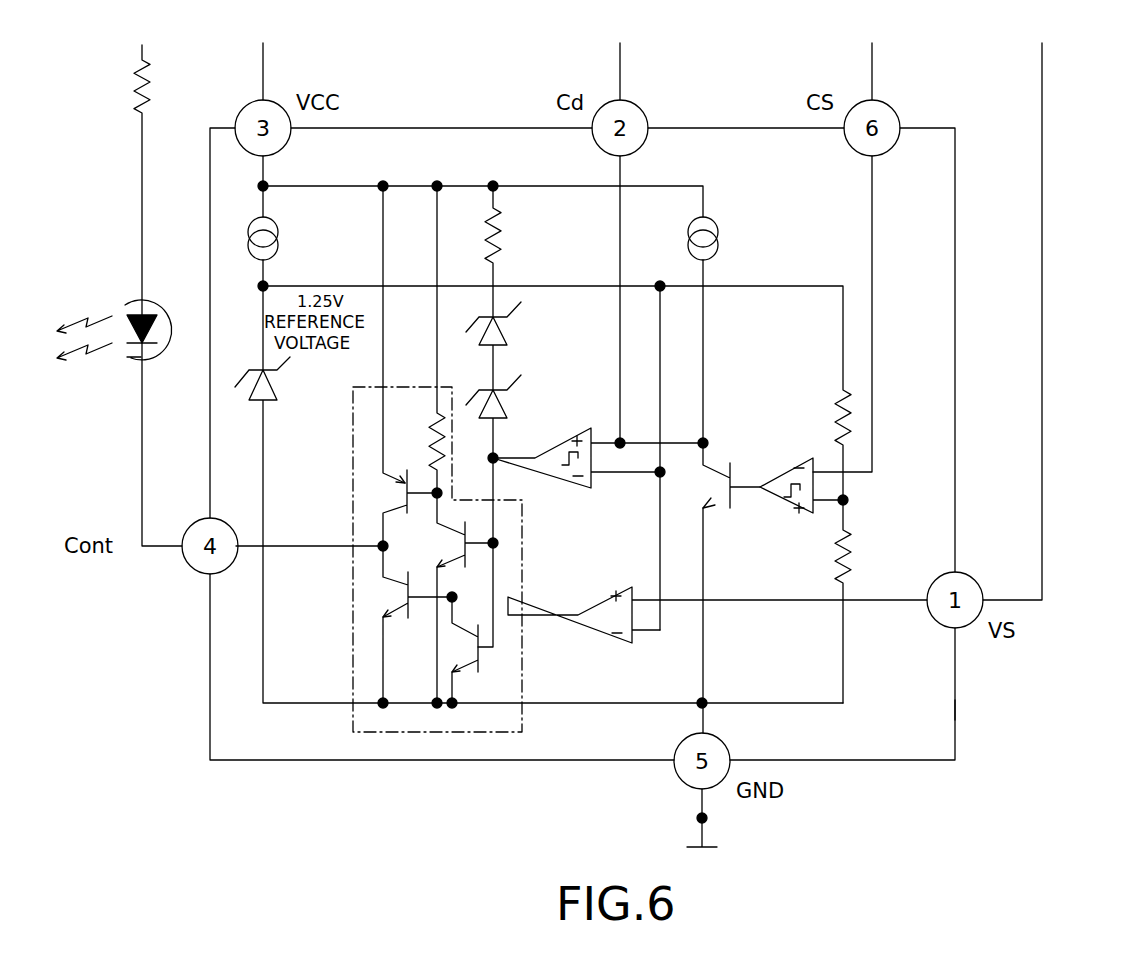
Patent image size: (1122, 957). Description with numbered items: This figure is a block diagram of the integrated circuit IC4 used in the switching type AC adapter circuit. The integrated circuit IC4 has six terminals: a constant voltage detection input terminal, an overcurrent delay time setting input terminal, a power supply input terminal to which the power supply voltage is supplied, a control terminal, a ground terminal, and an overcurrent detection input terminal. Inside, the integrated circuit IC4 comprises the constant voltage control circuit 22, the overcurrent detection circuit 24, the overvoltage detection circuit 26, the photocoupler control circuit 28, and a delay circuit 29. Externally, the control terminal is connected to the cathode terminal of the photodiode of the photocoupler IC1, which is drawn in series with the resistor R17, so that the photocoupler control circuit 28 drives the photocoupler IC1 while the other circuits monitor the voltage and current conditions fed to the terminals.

The constant voltage control circuit 22 is at (602, 633).
The overcurrent detection circuit 24 is at (790, 470).
The overvoltage detection circuit 26 is at (530, 246).
The photocoupler control circuit 28 is at (347, 666).
The delay circuit 29 is at (563, 474).
The resistor R17 is at (168, 295).
The photocoupler IC1 is at (168, 312).
The integrated circuit IC4 is at (957, 712).